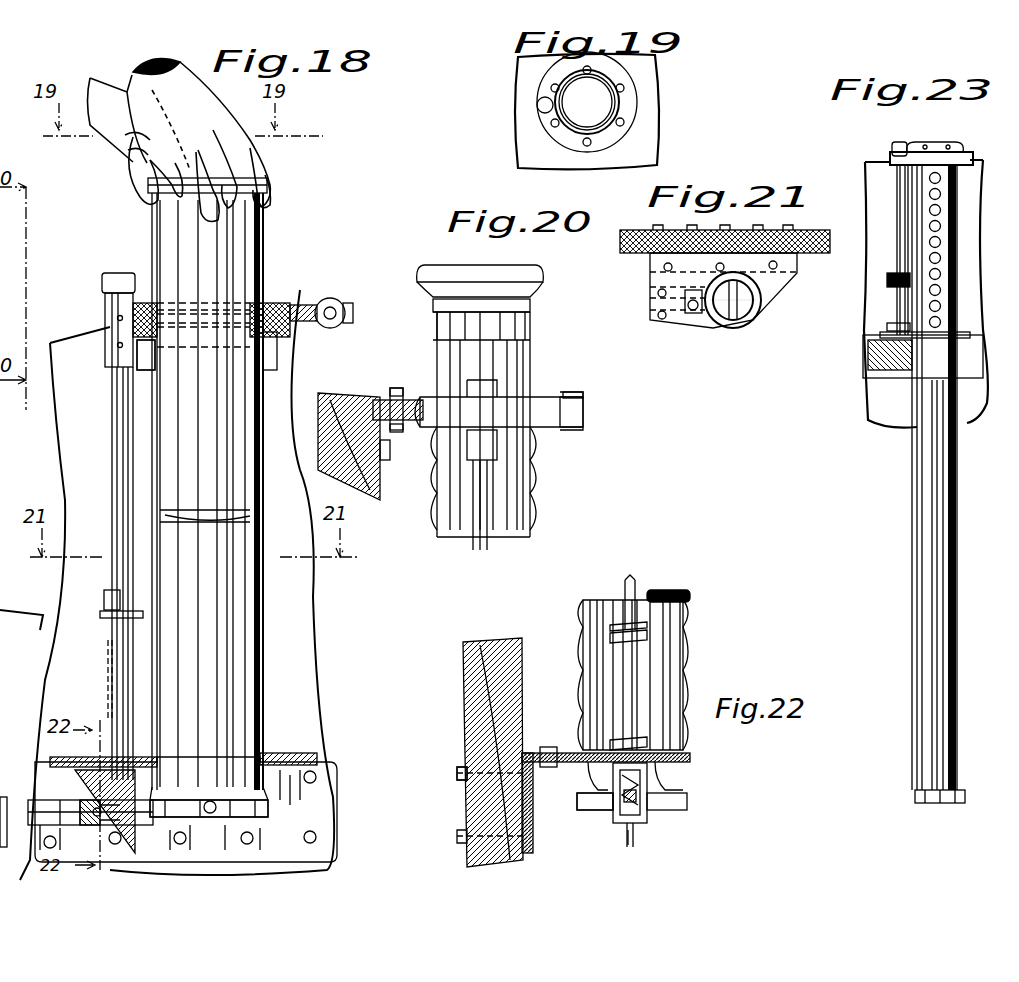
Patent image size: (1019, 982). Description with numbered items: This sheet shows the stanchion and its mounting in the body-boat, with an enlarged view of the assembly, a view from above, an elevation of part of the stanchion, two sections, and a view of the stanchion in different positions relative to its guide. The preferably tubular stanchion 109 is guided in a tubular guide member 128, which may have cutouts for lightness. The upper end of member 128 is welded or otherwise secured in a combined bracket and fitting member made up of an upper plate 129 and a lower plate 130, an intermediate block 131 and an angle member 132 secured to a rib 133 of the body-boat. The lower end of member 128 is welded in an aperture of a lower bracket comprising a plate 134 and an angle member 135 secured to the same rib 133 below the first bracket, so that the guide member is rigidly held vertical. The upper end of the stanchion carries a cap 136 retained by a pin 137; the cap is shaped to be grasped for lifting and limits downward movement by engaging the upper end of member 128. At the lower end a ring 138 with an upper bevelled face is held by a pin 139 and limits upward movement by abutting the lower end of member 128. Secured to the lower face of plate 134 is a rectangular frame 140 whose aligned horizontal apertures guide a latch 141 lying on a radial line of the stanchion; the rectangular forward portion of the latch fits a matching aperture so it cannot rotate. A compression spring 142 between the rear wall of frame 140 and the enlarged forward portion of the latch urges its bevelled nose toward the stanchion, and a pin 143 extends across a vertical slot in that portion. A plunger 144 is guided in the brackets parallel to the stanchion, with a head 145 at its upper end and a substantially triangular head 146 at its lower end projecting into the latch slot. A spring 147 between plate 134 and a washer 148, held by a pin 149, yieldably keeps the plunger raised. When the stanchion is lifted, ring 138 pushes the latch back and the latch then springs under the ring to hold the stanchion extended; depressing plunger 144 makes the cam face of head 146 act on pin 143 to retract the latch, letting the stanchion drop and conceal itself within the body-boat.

In FIG. 18, the stanchion 109 is at (182, 427).
In FIG. 20, the stanchion 109 is at (530, 343).
In FIG. 21, the stanchion 109 is at (757, 320).
In FIG. 23, the stanchion 109 is at (927, 488).
In FIG. 18, the tubular guide member 128 is at (267, 603).
In FIG. 20, the tubular guide member 128 is at (443, 533).
In FIG. 21, the tubular guide member 128 is at (720, 327).
In FIG. 22, the tubular guide member 128 is at (707, 575).
In FIG. 18, the upper plate 129 is at (287, 305).
In FIG. 19, the upper plate 129 is at (613, 137).
In FIG. 20, the upper plate 129 is at (533, 393).
In FIG. 18, the lower plate 130 is at (307, 328).
In FIG. 20, the lower plate 130 is at (553, 437).
In FIG. 18, the intermediate block 131 is at (103, 305).
In FIG. 20, the intermediate block 131 is at (547, 447).
In FIG. 20, the angle member 132 is at (385, 470).
In FIG. 20, the rib 133 is at (353, 397).
In FIG. 22, the rib 133 is at (465, 693).
In FIG. 18, the plate 134 is at (310, 753).
In FIG. 21, the plate 134 is at (757, 320).
In FIG. 22, the plate 134 is at (557, 747).
In FIG. 18, the angle member 135 is at (323, 823).
In FIG. 22, the angle member 135 is at (463, 793).
In FIG. 18, the cap 136 is at (248, 183).
In FIG. 19, the cap 136 is at (590, 100).
In FIG. 20, the cap 136 is at (530, 255).
In FIG. 23, the cap 136 is at (960, 130).
In FIG. 20, the pin 137 is at (510, 303).
In FIG. 18, the ring 138 is at (200, 830).
In FIG. 22, the ring 138 is at (607, 813).
In FIG. 23, the ring 138 is at (933, 803).
In FIG. 22, the pin 139 is at (680, 803).
In FIG. 18, the rectangular frame 140 is at (135, 830).
In FIG. 22, the rectangular frame 140 is at (647, 810).
In FIG. 18, the latch 141 is at (62, 856).
In FIG. 22, the latch 141 is at (620, 837).
In FIG. 18, the compression spring 142 is at (80, 837).
In FIG. 18, the pin 143 is at (97, 827).
In FIG. 22, the pin 143 is at (647, 817).
In FIG. 18, the plunger 144 is at (113, 487).
In FIG. 21, the plunger 144 is at (690, 317).
In FIG. 22, the plunger 144 is at (640, 590).
In FIG. 18, the head 145 is at (103, 350).
In FIG. 19, the head 145 is at (540, 108).
In FIG. 23, the head 145 is at (892, 148).
In FIG. 18, the triangular head 146 is at (113, 757).
In FIG. 22, the triangular head 146 is at (637, 830).
In FIG. 18, the spring 147 is at (107, 643).
In FIG. 22, the spring 147 is at (627, 630).
In FIG. 18, the washer 148 is at (107, 627).
In FIG. 22, the washer 148 is at (683, 618).
In FIG. 18, the pin 149 is at (100, 597).
In FIG. 22, the pin 149 is at (620, 617).